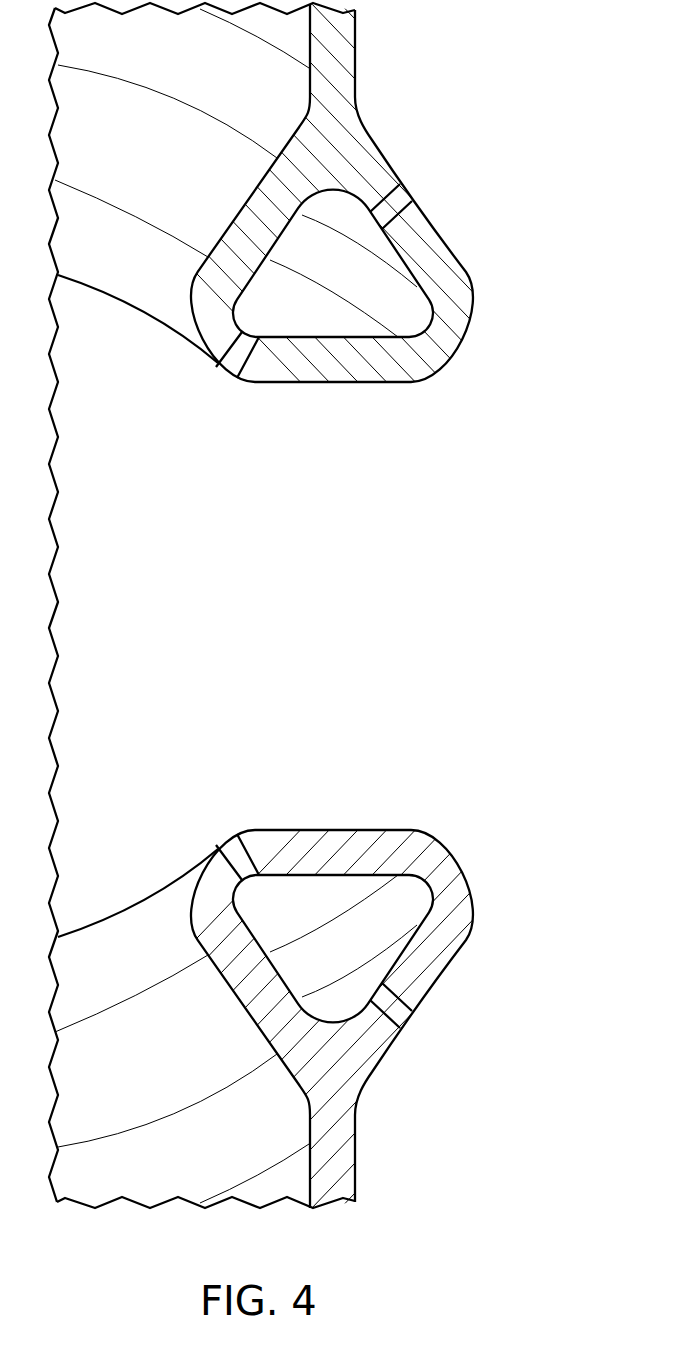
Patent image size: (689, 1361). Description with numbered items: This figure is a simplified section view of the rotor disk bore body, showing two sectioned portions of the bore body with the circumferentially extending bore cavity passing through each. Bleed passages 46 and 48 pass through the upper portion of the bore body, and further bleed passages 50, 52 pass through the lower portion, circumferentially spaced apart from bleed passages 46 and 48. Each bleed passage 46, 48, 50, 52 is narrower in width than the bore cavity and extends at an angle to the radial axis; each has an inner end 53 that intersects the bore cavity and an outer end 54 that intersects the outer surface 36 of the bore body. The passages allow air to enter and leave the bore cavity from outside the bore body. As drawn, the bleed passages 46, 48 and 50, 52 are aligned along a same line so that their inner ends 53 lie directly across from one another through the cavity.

The outer surface 36 is at (477, 307).
The bleed passage 46 is at (431, 176).
The bleed passage 48 is at (220, 403).
The bleed passage 50 is at (403, 993).
The bleed passage 52 is at (260, 823).
The inner end 53 is at (367, 218).
The outer end 54 is at (228, 378).